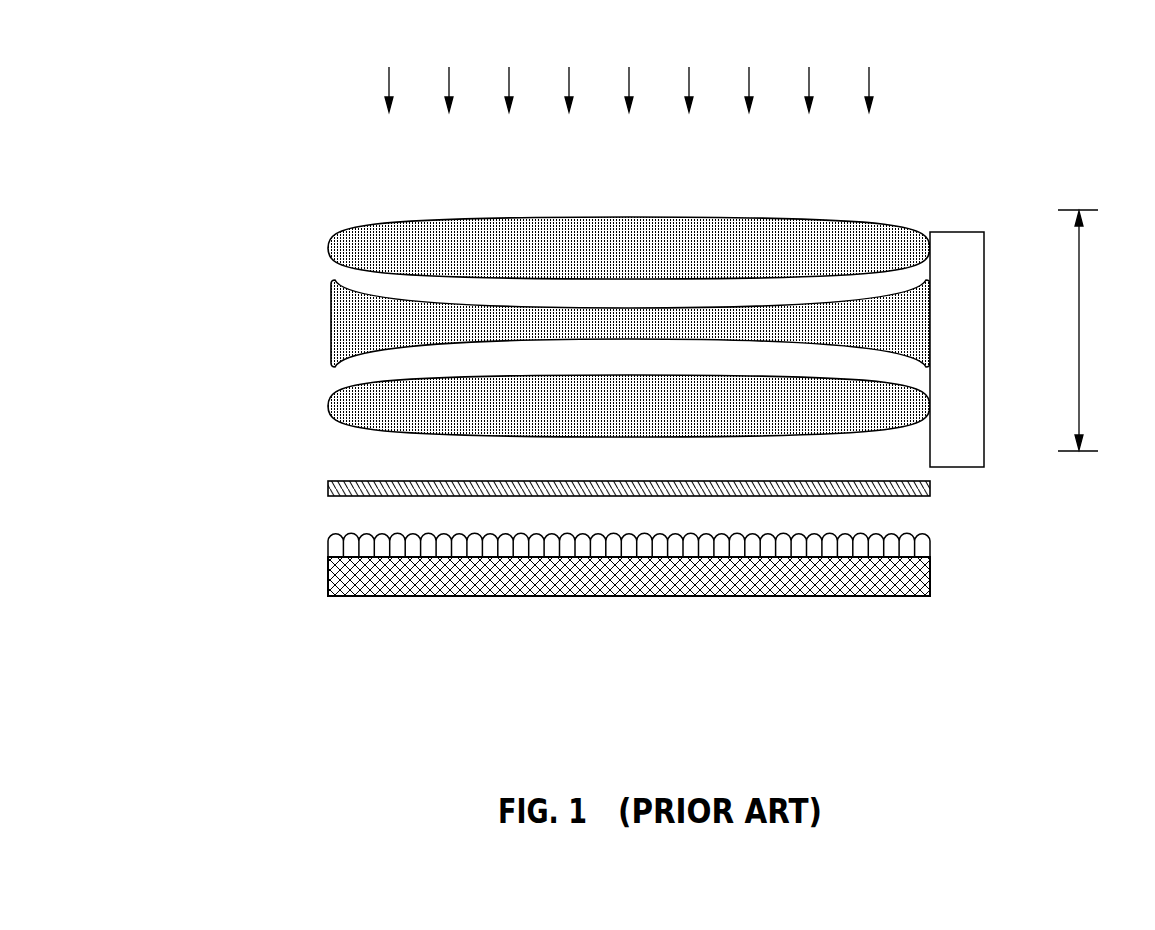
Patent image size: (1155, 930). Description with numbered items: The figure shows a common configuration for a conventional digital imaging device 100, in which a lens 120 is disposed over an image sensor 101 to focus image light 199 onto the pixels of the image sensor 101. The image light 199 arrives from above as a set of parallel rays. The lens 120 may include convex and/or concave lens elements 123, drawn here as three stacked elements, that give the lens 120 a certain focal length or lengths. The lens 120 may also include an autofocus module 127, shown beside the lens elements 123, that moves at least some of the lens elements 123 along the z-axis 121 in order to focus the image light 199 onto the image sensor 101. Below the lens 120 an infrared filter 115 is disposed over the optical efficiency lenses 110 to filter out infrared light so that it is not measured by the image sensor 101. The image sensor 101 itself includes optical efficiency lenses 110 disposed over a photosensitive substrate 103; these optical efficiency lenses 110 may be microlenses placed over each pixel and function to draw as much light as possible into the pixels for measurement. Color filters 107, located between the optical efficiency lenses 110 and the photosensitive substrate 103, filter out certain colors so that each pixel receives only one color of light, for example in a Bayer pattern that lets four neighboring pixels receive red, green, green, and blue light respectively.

The digital imaging device 100 is at (250, 140).
The image light 199 is at (629, 73).
The lens 120 is at (205, 445).
The lens elements 123 is at (333, 397).
The autofocus module 127 is at (957, 349).
The z-axis 121 is at (1083, 330).
The infrared (IR) filter 115 is at (920, 491).
The image sensor 101 is at (313, 595).
The optical efficiency lenses 110 is at (917, 538).
The color filters 107 is at (922, 548).
The photosensitive substrate 103 is at (917, 580).